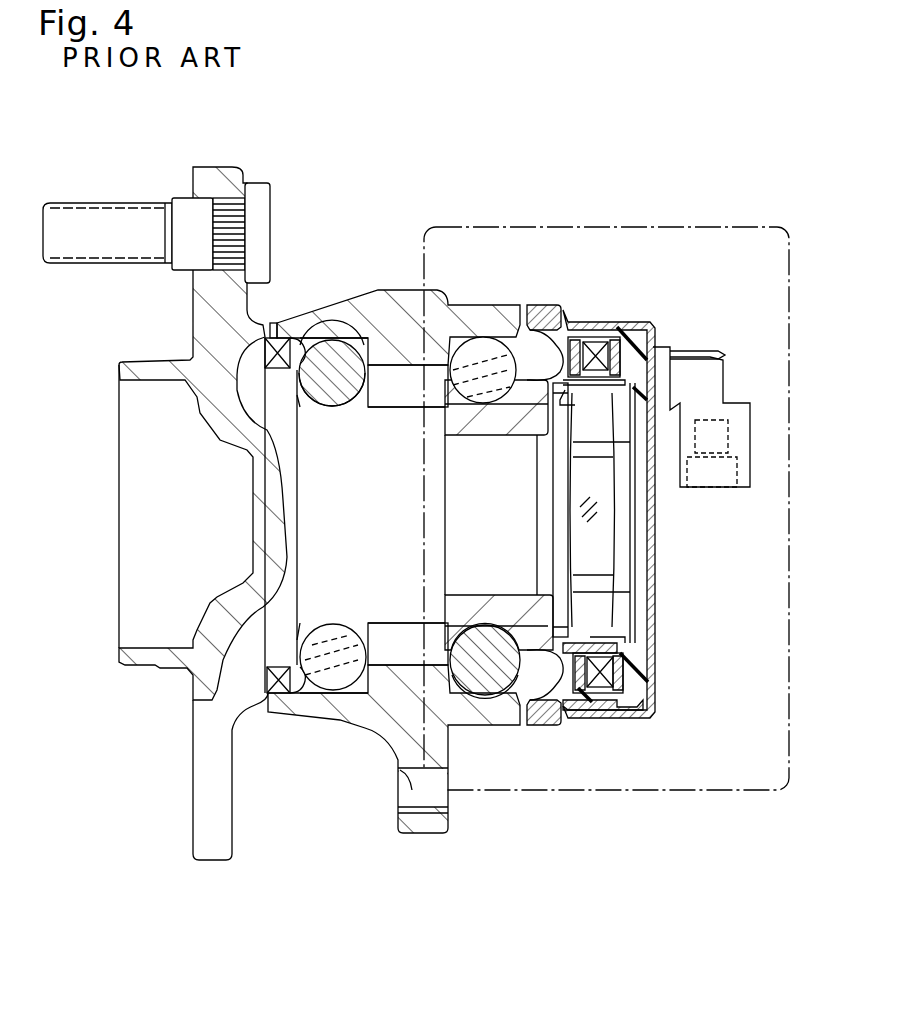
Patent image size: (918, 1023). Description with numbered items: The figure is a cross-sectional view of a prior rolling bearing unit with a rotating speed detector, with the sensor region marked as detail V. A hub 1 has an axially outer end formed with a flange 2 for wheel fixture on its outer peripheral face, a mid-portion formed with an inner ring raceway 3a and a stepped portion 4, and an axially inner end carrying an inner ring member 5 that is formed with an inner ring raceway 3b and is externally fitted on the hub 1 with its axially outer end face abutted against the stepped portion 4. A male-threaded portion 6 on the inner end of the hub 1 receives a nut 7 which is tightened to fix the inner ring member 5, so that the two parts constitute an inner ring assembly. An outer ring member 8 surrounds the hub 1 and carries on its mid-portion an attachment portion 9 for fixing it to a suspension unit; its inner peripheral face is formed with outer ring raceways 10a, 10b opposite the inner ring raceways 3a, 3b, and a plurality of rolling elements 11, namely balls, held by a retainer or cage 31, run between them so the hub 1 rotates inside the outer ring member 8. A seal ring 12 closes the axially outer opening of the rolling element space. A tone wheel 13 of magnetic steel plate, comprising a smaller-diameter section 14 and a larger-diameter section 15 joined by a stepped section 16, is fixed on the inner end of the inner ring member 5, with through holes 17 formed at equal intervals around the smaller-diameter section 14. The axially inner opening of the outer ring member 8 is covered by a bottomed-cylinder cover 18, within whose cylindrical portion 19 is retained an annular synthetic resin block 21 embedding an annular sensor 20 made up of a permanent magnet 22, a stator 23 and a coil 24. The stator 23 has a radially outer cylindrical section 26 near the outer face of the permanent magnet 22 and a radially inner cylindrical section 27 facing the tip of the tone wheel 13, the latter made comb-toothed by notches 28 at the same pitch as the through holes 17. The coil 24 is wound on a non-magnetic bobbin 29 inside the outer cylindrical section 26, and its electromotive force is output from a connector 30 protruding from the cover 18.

The detail region V is at (556, 227).
The hub 1 is at (300, 513).
The flange 2 is at (200, 331).
The inner ring raceway 3a is at (303, 640).
The inner ring raceway 3b is at (480, 410).
The stepped portion 4 is at (394, 561).
The inner ring member 5 is at (459, 515).
The male-threaded portion 6 is at (607, 517).
The nut 7 is at (547, 525).
The outer ring member 8 is at (492, 330).
The attachment portion 9 is at (423, 830).
The outer ring raceway 10a is at (337, 687).
The outer ring raceway 10b is at (483, 687).
The rolling elements 11 is at (332, 338).
The seal ring 12 is at (275, 323).
The tone wheel 13 is at (648, 685).
The smaller-diameter section 14 is at (603, 627).
The larger-diameter section 15 is at (543, 707).
The stepped section 16 is at (538, 330).
The through holes 17 is at (725, 357).
The cover 18 is at (653, 577).
The cylindrical portion 19 is at (622, 335).
The sensor 20 is at (600, 687).
The synthetic resin block 21 is at (628, 362).
The permanent magnet 22 is at (570, 340).
The stator 23 is at (620, 677).
The coil 24 is at (640, 345).
The radially outer cylindrical section 26 is at (592, 340).
The radially inner cylindrical section 27 is at (650, 657).
The notches 28 is at (605, 357).
The bobbin 29 is at (623, 673).
The connector 30 is at (703, 397).
The retainer or cage 31 is at (332, 388).